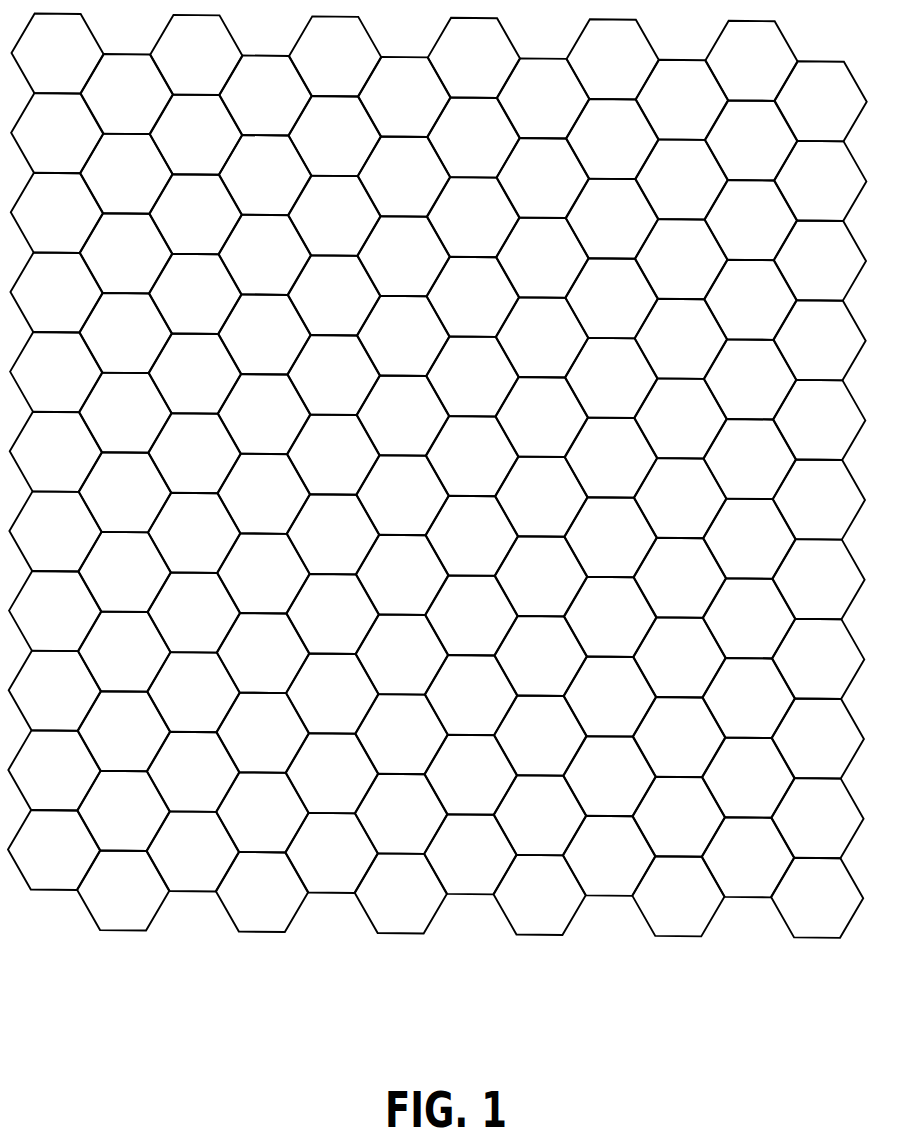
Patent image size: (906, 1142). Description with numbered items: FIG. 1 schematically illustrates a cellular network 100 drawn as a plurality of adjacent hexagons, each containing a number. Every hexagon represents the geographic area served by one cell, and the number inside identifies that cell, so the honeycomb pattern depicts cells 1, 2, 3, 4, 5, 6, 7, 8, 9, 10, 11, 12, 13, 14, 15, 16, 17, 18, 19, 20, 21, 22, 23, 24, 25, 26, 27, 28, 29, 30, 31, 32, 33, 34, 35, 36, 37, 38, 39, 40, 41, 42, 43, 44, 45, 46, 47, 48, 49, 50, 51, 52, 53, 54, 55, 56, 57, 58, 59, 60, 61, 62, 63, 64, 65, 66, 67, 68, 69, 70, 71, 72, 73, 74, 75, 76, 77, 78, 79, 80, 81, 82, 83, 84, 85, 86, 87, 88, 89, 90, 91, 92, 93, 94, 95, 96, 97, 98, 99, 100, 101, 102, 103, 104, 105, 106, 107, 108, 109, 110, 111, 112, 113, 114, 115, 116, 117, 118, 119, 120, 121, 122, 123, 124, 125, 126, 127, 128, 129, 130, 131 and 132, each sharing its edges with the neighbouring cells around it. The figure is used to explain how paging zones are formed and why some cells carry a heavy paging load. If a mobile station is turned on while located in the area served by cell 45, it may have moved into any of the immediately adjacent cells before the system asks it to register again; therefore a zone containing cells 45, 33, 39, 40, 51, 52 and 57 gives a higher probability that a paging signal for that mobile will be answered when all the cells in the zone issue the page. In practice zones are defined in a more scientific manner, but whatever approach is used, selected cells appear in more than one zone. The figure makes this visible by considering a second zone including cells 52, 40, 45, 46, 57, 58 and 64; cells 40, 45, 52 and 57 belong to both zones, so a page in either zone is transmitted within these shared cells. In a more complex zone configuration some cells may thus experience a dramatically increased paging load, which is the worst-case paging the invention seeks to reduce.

The hexagonal cell array 100 is at (667, 1019).
The cell 1 is at (57, 53).
The cell 2 is at (196, 55).
The cell 3 is at (335, 56).
The cell 4 is at (474, 58).
The cell 5 is at (613, 59).
The cell 6 is at (751, 61).
The cell 7 is at (127, 94).
The cell 8 is at (265, 95).
The cell 9 is at (404, 97).
The cell 10 is at (543, 98).
The cell 11 is at (682, 100).
The cell 12 is at (821, 101).
The cell 13 is at (57, 133).
The cell 14 is at (196, 134).
The cell 15 is at (335, 136).
The cell 16 is at (473, 137).
The cell 17 is at (612, 139).
The cell 18 is at (751, 140).
The cell 19 is at (126, 173).
The cell 20 is at (265, 175).
The cell 21 is at (404, 176).
The cell 22 is at (543, 178).
The cell 23 is at (681, 179).
The cell 24 is at (820, 181).
The cell 25 is at (57, 213).
The cell 26 is at (195, 214).
The cell 27 is at (334, 215).
The cell 28 is at (473, 217).
The cell 29 is at (612, 218).
The cell 30 is at (751, 220).
The cell 31 is at (126, 253).
The cell 32 is at (265, 255).
The cell 33 is at (403, 256).
The cell 34 is at (542, 257).
The cell 35 is at (681, 259).
The cell 36 is at (820, 260).
The cell 37 is at (56, 292).
The cell 38 is at (195, 294).
The cell 39 is at (334, 295).
The cell 40 is at (473, 297).
The cell 41 is at (611, 298).
The cell 42 is at (750, 300).
The cell 43 is at (125, 333).
The cell 44 is at (264, 334).
The cell 45 is at (403, 336).
The cell 46 is at (542, 337).
The cell 47 is at (681, 339).
The cell 48 is at (819, 340).
The cell 49 is at (56, 372).
The cell 50 is at (195, 373).
The cell 51 is at (334, 375).
The cell 52 is at (472, 376).
The cell 53 is at (611, 378).
The cell 54 is at (750, 379).
The cell 55 is at (125, 412).
The cell 56 is at (264, 414).
The cell 57 is at (403, 415).
The cell 58 is at (542, 417).
The cell 59 is at (680, 418).
The cell 60 is at (819, 420).
The cell 61 is at (56, 452).
The cell 62 is at (194, 453).
The cell 63 is at (333, 454).
The cell 64 is at (472, 456).
The cell 65 is at (611, 457).
The cell 66 is at (750, 459).
The cell 67 is at (125, 492).
The cell 68 is at (264, 494).
The cell 69 is at (402, 495).
The cell 70 is at (541, 496).
The cell 71 is at (680, 498).
The cell 72 is at (819, 499).
The cell 73 is at (55, 531).
The cell 74 is at (194, 533).
The cell 75 is at (333, 534).
The cell 76 is at (472, 535).
The cell 77 is at (610, 537).
The cell 78 is at (749, 538).
The cell 79 is at (124, 572).
The cell 80 is at (263, 573).
The cell 81 is at (402, 575).
The cell 82 is at (541, 576).
The cell 83 is at (680, 577).
The cell 84 is at (818, 579).
The cell 85 is at (55, 611).
The cell 86 is at (194, 612).
The cell 87 is at (332, 614).
The cell 88 is at (471, 615).
The cell 89 is at (610, 617).
The cell 90 is at (749, 618).
The cell 91 is at (124, 651).
The cell 92 is at (263, 653).
The cell 93 is at (402, 654).
The cell 94 is at (540, 656).
The cell 95 is at (679, 657).
The cell 96 is at (818, 659).
The cell 97 is at (55, 690).
The cell 98 is at (193, 692).
The cell 99 is at (332, 693).
The cell 101 is at (610, 696).
The cell 102 is at (749, 698).
The cell 103 is at (124, 731).
The cell 104 is at (263, 732).
The cell 105 is at (401, 734).
The cell 106 is at (540, 735).
The cell 107 is at (679, 737).
The cell 108 is at (818, 738).
The cell 109 is at (54, 770).
The cell 110 is at (193, 772).
The cell 111 is at (332, 773).
The cell 112 is at (471, 774).
The cell 113 is at (609, 776).
The cell 114 is at (748, 777).
The cell 115 is at (123, 811).
The cell 116 is at (262, 812).
The cell 117 is at (401, 814).
The cell 118 is at (540, 815).
The cell 119 is at (679, 816).
The cell 120 is at (817, 818).
The cell 121 is at (54, 850).
The cell 122 is at (193, 851).
The cell 123 is at (331, 853).
The cell 124 is at (470, 854).
The cell 125 is at (609, 856).
The cell 126 is at (748, 857).
The cell 127 is at (123, 890).
The cell 128 is at (262, 892).
The cell 129 is at (401, 893).
The cell 130 is at (539, 895).
The cell 131 is at (678, 896).
The cell 132 is at (817, 898).